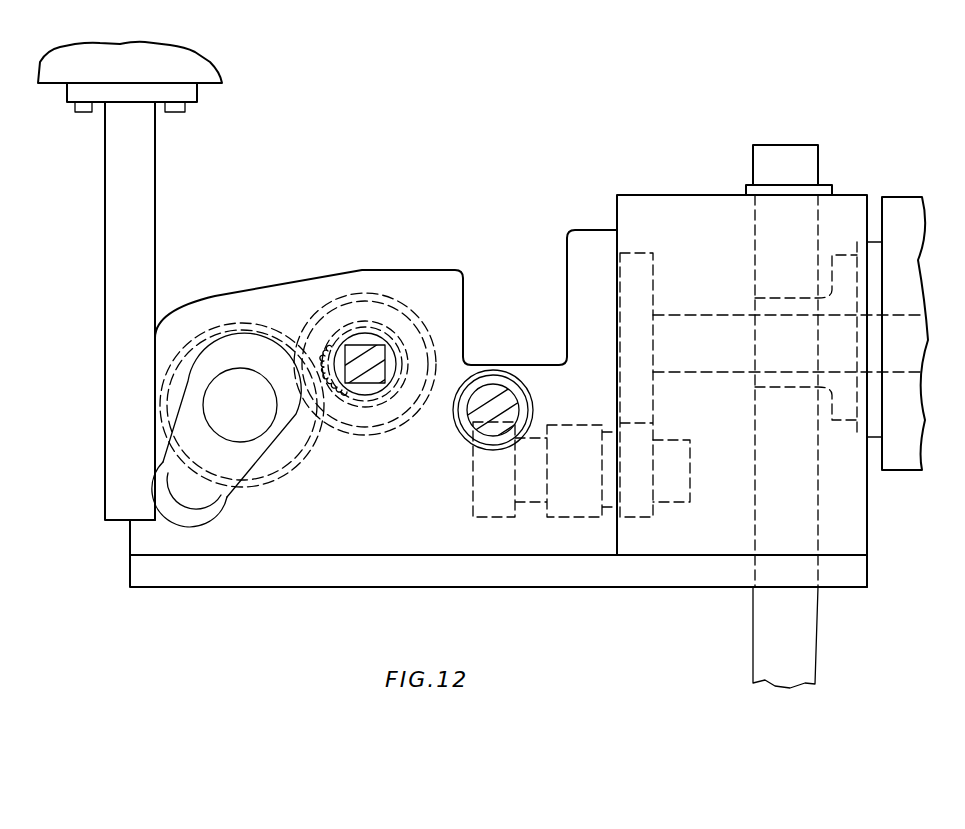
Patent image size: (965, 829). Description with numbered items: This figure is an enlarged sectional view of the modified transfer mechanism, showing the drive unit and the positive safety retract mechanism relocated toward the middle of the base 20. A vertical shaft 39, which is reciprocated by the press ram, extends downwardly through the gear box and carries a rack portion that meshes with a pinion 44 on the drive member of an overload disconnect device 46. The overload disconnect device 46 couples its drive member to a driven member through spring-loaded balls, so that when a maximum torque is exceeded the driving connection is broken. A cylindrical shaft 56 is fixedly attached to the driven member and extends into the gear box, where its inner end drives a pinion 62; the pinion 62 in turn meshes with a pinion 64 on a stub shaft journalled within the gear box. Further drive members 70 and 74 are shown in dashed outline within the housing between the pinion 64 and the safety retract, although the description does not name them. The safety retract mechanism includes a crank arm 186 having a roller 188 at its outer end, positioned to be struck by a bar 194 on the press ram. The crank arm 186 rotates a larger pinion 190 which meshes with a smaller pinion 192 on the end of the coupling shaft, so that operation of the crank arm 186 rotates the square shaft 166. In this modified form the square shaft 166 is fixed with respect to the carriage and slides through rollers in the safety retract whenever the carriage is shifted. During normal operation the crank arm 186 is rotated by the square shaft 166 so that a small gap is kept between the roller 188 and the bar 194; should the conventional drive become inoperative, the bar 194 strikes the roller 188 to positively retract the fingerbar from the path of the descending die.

The base 20 is at (262, 575).
The vertical shaft 39 is at (812, 170).
The pinion 44 is at (787, 390).
The overload disconnect device 46 is at (918, 180).
The cylindrical shaft 56 is at (683, 327).
The pinion 62 is at (640, 274).
The pinion 64 is at (640, 516).
The actuator assembly 70 is at (478, 503).
The pivot pin 74 is at (500, 382).
The square shaft 166 is at (376, 378).
The crank arm 186 is at (252, 455).
The roller 188 is at (205, 517).
The larger pinion 190 is at (202, 335).
The smaller pinion 192 is at (352, 308).
The bar 194 is at (146, 222).